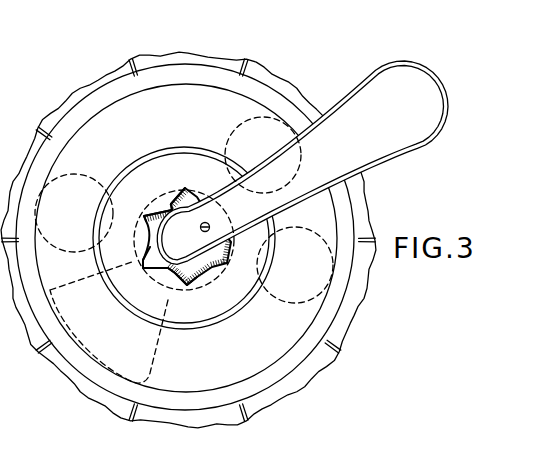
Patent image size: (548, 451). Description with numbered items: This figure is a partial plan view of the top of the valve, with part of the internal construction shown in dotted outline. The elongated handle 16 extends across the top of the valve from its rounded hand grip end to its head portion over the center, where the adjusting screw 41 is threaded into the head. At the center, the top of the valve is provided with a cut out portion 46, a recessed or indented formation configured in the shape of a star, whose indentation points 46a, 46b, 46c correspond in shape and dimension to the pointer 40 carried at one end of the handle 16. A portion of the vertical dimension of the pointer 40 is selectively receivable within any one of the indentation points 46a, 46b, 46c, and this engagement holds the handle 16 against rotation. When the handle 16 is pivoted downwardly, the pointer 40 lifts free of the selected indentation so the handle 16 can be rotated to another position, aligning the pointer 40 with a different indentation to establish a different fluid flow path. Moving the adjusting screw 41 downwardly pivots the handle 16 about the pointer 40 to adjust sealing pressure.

The handle 16 is at (387, 56).
The pointer 40 is at (138, 251).
The adjusting screw 41 is at (206, 222).
The cut out portion 46 is at (226, 269).
The indentation point 46a is at (188, 288).
The indentation point 46b is at (146, 271).
The indentation point 46c is at (148, 212).